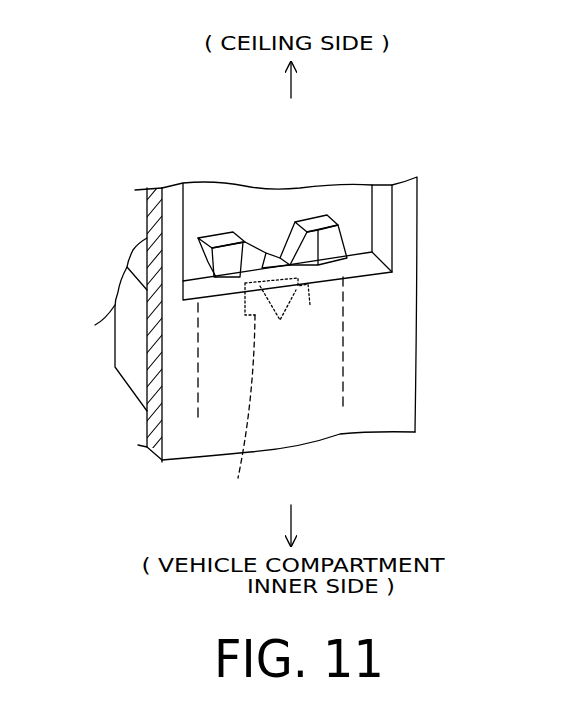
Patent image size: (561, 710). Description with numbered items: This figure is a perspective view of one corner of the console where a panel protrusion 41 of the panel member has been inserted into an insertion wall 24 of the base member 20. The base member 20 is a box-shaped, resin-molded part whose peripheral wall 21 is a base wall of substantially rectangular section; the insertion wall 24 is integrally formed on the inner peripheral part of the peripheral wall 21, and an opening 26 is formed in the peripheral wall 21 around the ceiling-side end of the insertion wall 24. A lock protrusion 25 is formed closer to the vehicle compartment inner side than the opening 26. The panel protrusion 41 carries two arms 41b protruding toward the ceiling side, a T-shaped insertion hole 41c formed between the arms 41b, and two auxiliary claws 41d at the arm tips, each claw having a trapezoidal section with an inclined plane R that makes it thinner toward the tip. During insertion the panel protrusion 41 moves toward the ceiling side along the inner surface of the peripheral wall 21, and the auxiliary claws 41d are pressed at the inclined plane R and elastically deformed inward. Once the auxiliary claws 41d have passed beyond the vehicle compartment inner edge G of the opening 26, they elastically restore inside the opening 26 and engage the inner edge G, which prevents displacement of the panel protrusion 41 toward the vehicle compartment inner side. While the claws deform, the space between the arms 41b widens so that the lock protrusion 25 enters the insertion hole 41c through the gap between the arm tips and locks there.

The base member 20 is at (392, 284).
The peripheral wall 21 is at (388, 369).
The insertion wall 24 is at (130, 355).
The lock protrusion 25 is at (310, 305).
The opening 26 is at (380, 231).
The panel protrusion 41 is at (313, 212).
The arm 41b is at (246, 241).
The insertion hole 41c is at (241, 407).
The auxiliary claw 41d is at (218, 252).
The vehicle compartment inner edge G is at (335, 278).
The inclined plane R is at (368, 232).